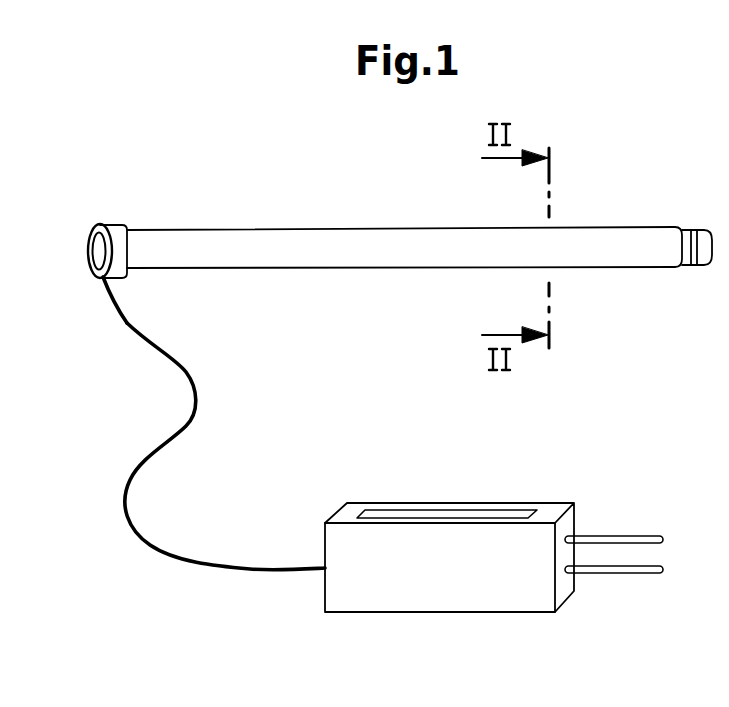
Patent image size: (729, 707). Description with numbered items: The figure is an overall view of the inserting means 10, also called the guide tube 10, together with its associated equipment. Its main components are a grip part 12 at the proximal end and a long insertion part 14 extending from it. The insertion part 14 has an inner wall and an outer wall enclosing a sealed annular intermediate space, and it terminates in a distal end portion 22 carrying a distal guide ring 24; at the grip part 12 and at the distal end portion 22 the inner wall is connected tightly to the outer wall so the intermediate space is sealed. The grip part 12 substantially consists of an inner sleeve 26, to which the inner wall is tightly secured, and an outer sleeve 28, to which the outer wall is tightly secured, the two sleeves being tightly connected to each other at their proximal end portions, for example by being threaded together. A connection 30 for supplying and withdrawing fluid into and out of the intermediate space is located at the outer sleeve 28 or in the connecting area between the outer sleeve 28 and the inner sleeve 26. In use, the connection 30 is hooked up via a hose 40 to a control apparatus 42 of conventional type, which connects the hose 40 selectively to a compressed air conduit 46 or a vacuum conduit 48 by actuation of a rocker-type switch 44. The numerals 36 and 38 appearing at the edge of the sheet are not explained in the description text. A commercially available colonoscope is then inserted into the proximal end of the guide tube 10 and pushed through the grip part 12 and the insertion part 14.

The inserting means 10 is at (258, 197).
The grip part 12 is at (122, 212).
The insertion part 14 is at (350, 218).
The distal end portion 22 is at (687, 232).
The distal guide ring 24 is at (700, 237).
The inner sleeve 26 is at (95, 232).
The outer sleeve 28 is at (125, 257).
The connection 30 is at (103, 280).
The element 36 is at (724, 359).
The element 38 is at (717, 472).
The hose 40 is at (192, 425).
The control apparatus 42 is at (386, 602).
The rocker-type switch 44 is at (420, 510).
The compressed air conduit 46 is at (613, 534).
The vacuum conduit 48 is at (613, 575).